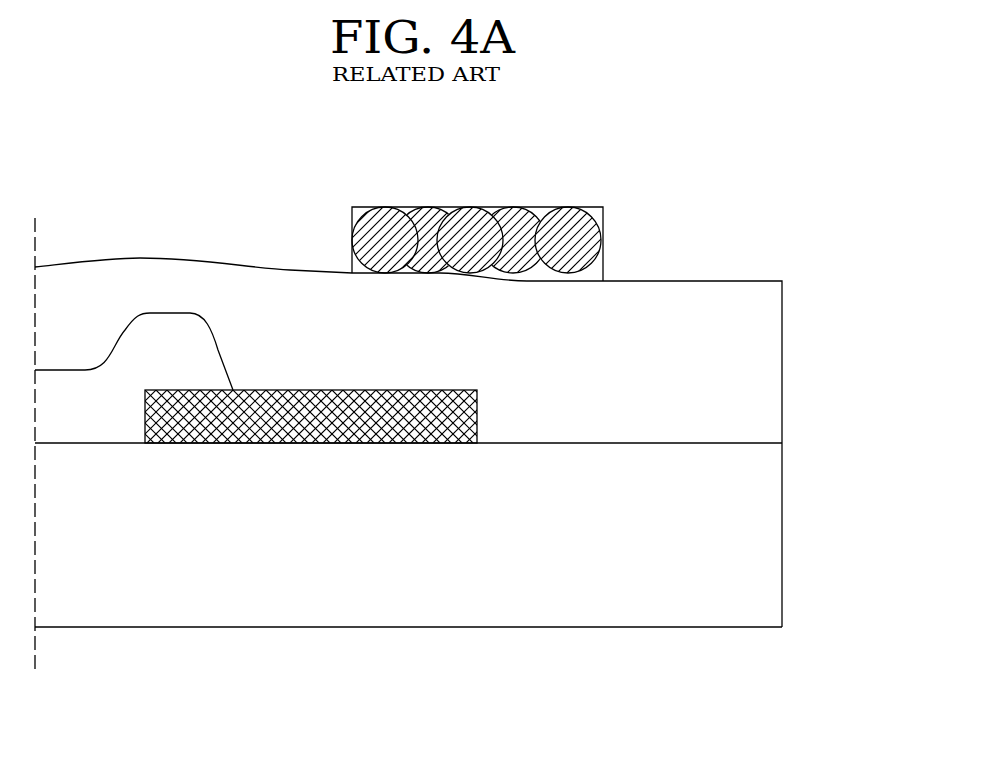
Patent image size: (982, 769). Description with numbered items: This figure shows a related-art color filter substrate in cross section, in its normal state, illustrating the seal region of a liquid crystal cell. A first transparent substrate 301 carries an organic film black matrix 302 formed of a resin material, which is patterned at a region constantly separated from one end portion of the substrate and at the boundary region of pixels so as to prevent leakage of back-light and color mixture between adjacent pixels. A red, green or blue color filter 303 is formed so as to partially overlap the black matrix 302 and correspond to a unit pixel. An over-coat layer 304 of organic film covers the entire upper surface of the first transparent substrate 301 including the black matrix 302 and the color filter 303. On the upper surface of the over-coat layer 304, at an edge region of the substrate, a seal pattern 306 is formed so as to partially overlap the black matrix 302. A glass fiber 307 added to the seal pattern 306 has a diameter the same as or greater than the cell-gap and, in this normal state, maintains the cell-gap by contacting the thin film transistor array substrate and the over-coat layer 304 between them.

The first transparent substrate 301 is at (763, 575).
The organic film black matrix 302 is at (290, 418).
The color filter 303 is at (108, 405).
The over-coat layer 304 is at (758, 373).
The seal pattern 306 is at (598, 272).
The glass fiber 307 is at (558, 230).